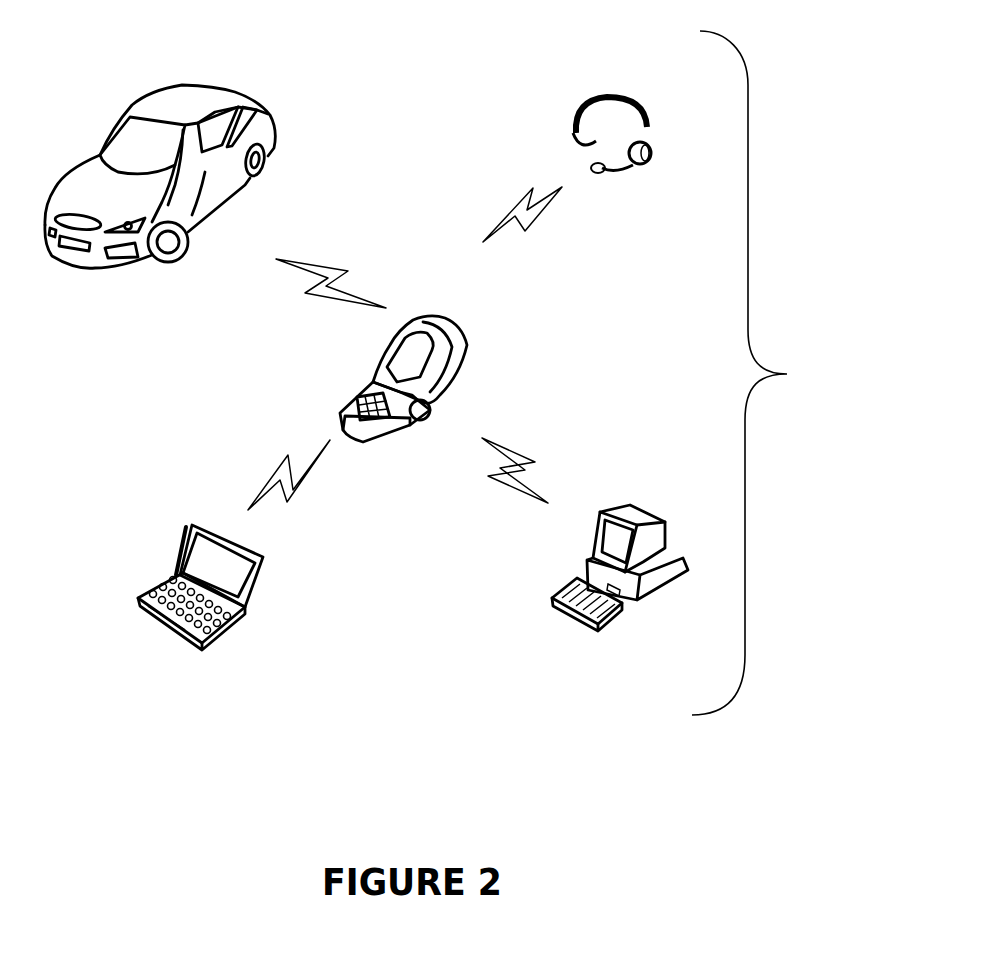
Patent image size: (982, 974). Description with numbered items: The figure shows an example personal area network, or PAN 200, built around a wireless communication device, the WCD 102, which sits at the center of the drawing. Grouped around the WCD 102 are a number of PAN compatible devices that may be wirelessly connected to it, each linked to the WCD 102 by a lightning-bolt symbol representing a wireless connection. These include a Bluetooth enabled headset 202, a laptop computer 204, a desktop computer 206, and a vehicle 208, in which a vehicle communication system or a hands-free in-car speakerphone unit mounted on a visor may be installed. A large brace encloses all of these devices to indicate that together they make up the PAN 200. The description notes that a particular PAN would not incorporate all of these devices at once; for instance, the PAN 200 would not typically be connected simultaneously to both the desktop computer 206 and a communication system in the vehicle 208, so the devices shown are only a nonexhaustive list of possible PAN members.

The personal area network (PAN) 200 is at (787, 374).
The wireless communication device (WCD) 102 is at (443, 313).
The Bluetooth enabled headset 202 is at (640, 77).
The laptop computer 204 is at (267, 595).
The desktop computer 206 is at (548, 574).
The vehicle 208 is at (235, 62).